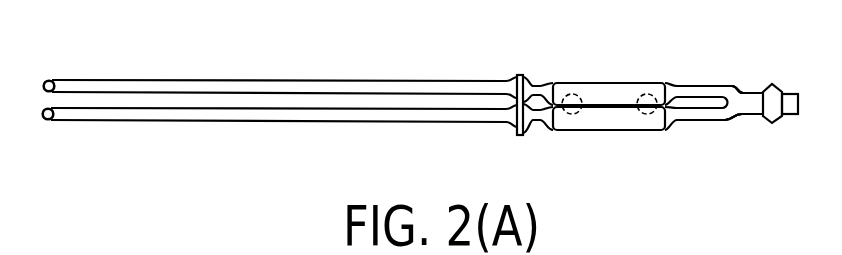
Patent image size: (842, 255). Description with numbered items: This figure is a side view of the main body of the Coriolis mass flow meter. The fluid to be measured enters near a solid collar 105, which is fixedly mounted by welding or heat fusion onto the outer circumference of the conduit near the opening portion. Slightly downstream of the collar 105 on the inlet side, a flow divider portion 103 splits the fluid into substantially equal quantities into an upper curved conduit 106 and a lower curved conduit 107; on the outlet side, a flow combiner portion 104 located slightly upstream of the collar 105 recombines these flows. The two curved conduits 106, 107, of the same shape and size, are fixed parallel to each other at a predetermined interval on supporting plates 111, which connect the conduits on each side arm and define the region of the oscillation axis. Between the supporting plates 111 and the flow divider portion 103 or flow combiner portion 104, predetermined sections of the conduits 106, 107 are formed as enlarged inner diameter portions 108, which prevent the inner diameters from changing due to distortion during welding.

The flow divider portion 103 is at (733, 88).
The flow combiner portion 104 is at (744, 103).
The collar 105 is at (773, 123).
The upper curved conduit 106 is at (362, 81).
The lower curved conduit 107 is at (378, 122).
The enlarged inner diameter portions 108 is at (593, 82).
The supporting plates 111 is at (518, 74).